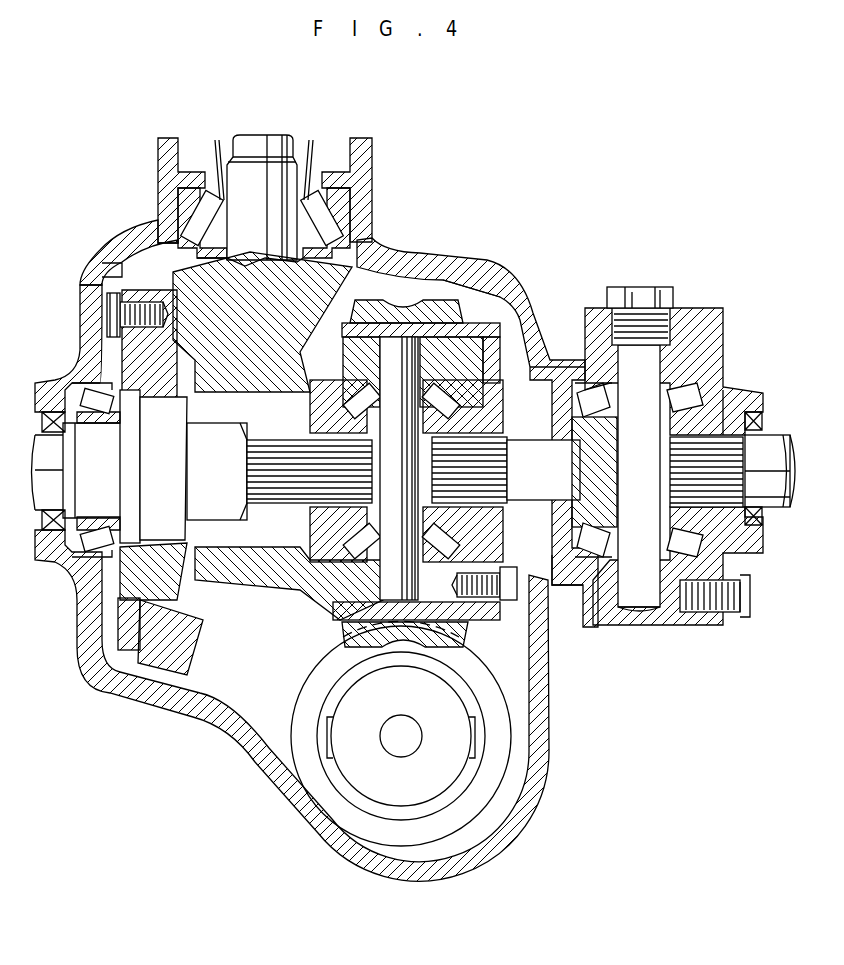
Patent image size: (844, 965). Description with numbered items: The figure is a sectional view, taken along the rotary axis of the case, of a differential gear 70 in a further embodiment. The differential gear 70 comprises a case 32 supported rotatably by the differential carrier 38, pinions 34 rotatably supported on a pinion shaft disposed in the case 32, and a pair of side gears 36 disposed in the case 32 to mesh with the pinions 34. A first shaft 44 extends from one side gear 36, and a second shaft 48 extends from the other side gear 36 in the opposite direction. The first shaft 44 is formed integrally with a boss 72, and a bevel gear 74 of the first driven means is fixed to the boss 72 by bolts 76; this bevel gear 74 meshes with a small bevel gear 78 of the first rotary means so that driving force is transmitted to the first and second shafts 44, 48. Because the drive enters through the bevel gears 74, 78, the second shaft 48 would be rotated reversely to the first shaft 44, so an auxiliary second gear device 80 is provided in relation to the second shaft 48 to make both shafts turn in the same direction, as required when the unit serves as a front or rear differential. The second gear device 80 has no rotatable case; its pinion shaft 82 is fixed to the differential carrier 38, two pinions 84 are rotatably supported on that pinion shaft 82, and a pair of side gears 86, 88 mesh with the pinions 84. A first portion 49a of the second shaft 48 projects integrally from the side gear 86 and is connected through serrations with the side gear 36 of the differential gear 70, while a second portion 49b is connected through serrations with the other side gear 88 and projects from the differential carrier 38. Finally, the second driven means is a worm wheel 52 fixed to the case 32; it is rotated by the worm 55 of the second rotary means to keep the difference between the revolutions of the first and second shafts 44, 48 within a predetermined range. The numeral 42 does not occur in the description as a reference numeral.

The case 32 is at (358, 350).
The pinions 34 is at (370, 345).
The side gears 36 is at (305, 560).
The differential carrier 38 is at (513, 287).
The housing flange 42 is at (420, 353).
The first shaft 44 is at (260, 493).
The second shaft 48 is at (773, 515).
The first portion of the second shaft 49a is at (548, 590).
The second portion of the second shaft 49b is at (770, 437).
The worm wheel 52 is at (463, 312).
The worm 55 is at (497, 763).
The differential gear 70 is at (457, 227).
The boss 72 is at (130, 370).
The bevel gear 74 is at (177, 637).
The bolts 76 is at (105, 315).
The small bevel gear 78 is at (165, 247).
The second gear device 80 is at (687, 307).
The pinion shaft 82 is at (693, 333).
The pinions 84 is at (670, 375).
The side gear 86 is at (583, 387).
The side gear 88 is at (690, 385).